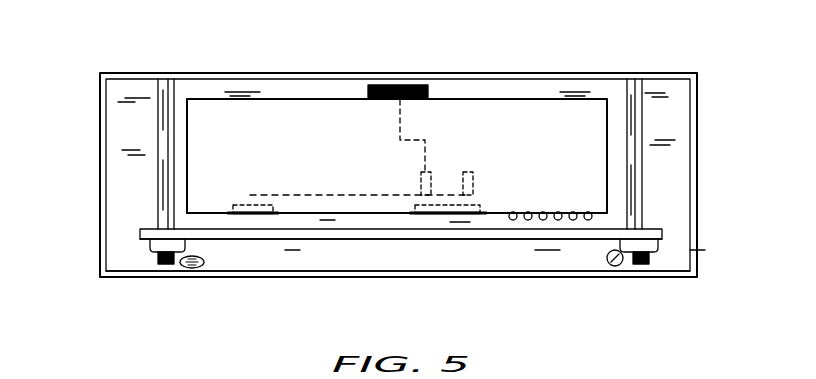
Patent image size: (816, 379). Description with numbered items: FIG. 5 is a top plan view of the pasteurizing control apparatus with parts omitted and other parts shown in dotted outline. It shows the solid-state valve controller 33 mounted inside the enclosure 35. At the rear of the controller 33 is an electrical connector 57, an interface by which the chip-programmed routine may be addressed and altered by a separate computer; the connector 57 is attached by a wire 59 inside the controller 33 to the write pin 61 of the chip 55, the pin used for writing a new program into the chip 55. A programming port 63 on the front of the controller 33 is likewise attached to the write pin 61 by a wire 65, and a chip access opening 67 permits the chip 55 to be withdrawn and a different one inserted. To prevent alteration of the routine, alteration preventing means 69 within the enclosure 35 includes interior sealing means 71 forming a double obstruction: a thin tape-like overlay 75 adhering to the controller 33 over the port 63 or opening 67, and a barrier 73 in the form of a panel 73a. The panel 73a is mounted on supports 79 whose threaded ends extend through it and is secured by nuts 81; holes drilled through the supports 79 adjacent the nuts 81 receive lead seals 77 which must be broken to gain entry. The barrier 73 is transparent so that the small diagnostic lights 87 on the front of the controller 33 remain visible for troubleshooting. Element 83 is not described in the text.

The enclosure 35 is at (125, 73).
The valve controller 33 is at (548, 100).
The electrical connector 57 is at (378, 73).
The wire 59 is at (402, 118).
The write pin 61 is at (430, 185).
The chip 55 is at (474, 197).
The wire 65 is at (312, 195).
The programming port 63 is at (237, 204).
The chip access opening 67 is at (486, 207).
The overlay 75 is at (262, 215).
The lights 87 is at (558, 220).
The barrier 73 is at (502, 245).
The panel 73a is at (580, 240).
The panel bottom edge 83 is at (305, 215).
The supports 79 is at (158, 137).
The nuts 81 is at (150, 243).
The interior sealing means 71 is at (150, 259).
The lead seals 77 is at (183, 268).
The alteration preventing means 69 is at (238, 280).